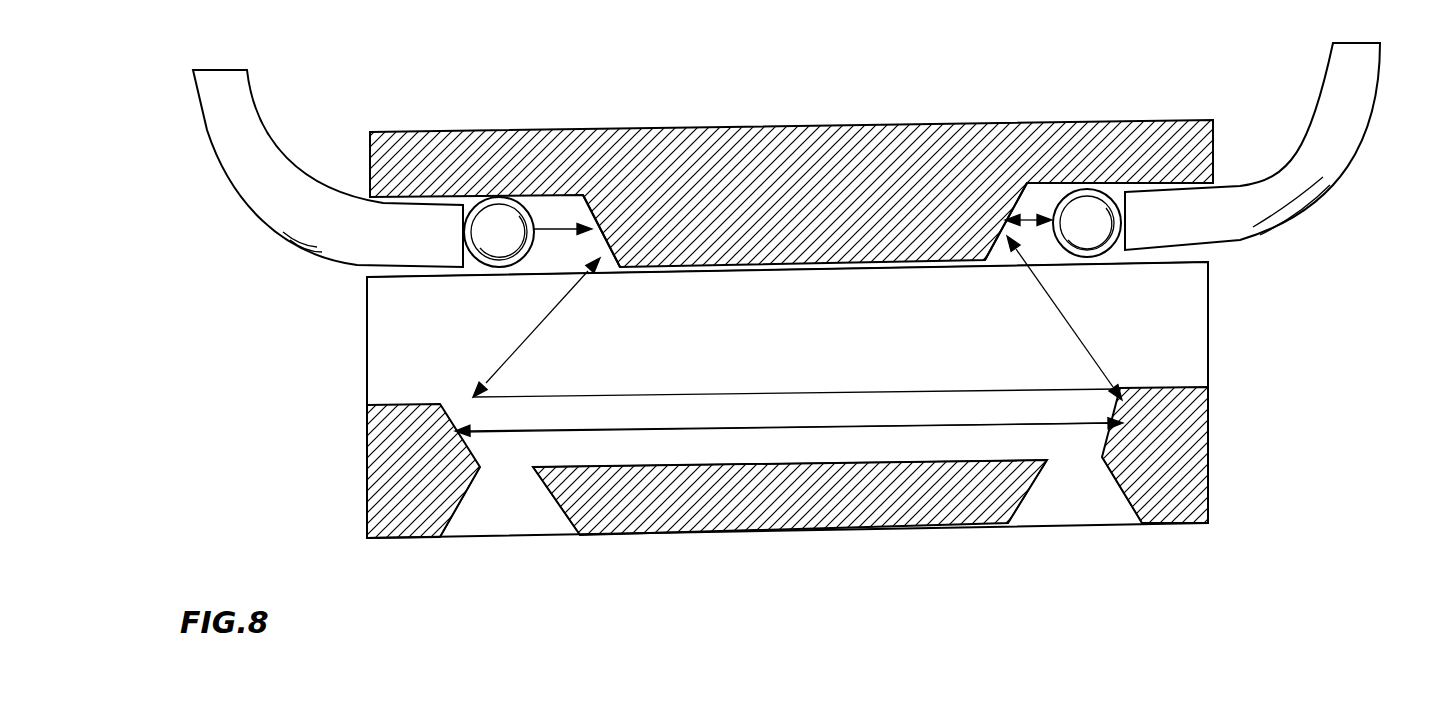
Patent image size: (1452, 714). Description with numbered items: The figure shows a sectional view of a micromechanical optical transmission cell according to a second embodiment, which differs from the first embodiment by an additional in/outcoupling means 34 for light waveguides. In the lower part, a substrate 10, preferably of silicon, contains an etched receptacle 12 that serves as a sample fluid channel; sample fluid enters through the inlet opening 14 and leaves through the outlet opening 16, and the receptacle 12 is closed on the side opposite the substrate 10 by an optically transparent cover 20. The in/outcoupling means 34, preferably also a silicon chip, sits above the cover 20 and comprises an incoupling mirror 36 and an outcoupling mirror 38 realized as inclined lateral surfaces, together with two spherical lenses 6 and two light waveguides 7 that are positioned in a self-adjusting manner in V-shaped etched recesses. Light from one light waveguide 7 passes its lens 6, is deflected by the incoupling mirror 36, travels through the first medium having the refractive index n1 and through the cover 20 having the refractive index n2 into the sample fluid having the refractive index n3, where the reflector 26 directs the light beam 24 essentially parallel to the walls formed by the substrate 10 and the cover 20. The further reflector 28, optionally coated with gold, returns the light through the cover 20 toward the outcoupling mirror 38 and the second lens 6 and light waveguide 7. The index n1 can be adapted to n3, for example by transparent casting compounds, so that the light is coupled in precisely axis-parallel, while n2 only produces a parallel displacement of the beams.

The spherical lens 6 is at (503, 230).
The light waveguide 7 is at (263, 163).
The substrate 10 is at (842, 500).
The receptacle 12 is at (783, 447).
The inlet opening 14 is at (507, 497).
The outlet opening 16 is at (1090, 487).
The cover 20 is at (943, 367).
The light beam 24 is at (665, 433).
The reflector 26 is at (462, 430).
The further reflector 28 is at (1113, 412).
The in/outcoupling means 34 is at (818, 195).
The incoupling mirror 36 is at (600, 173).
The outcoupling mirror 38 is at (970, 257).
The refractive index of first medium n1 is at (555, 208).
The refractive index of cover n2 is at (795, 375).
The refractive index of sample fluid n3 is at (789, 416).